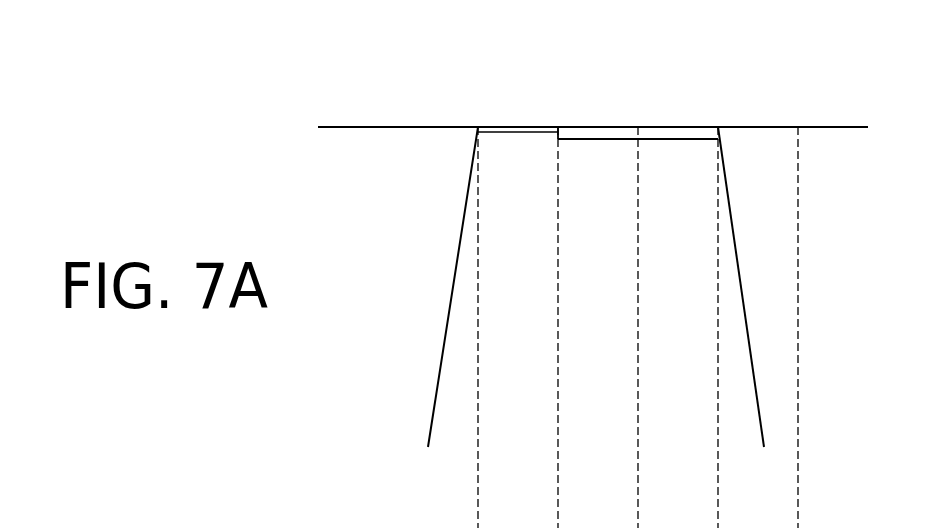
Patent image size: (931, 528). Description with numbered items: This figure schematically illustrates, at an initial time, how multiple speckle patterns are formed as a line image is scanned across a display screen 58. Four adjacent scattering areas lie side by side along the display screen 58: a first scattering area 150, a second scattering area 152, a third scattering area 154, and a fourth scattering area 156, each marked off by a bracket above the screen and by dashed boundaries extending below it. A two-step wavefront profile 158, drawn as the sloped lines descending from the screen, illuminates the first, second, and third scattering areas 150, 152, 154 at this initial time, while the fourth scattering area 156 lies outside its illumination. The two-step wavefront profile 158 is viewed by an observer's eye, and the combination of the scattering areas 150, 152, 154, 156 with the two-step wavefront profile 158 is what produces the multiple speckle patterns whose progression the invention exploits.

The display screen 58 is at (350, 126).
The first scattering area 150 is at (558, 107).
The second scattering area 152 is at (638, 107).
The third scattering area 154 is at (718, 107).
The fourth scattering area 156 is at (798, 107).
The two-step wavefront profile 158 is at (432, 417).